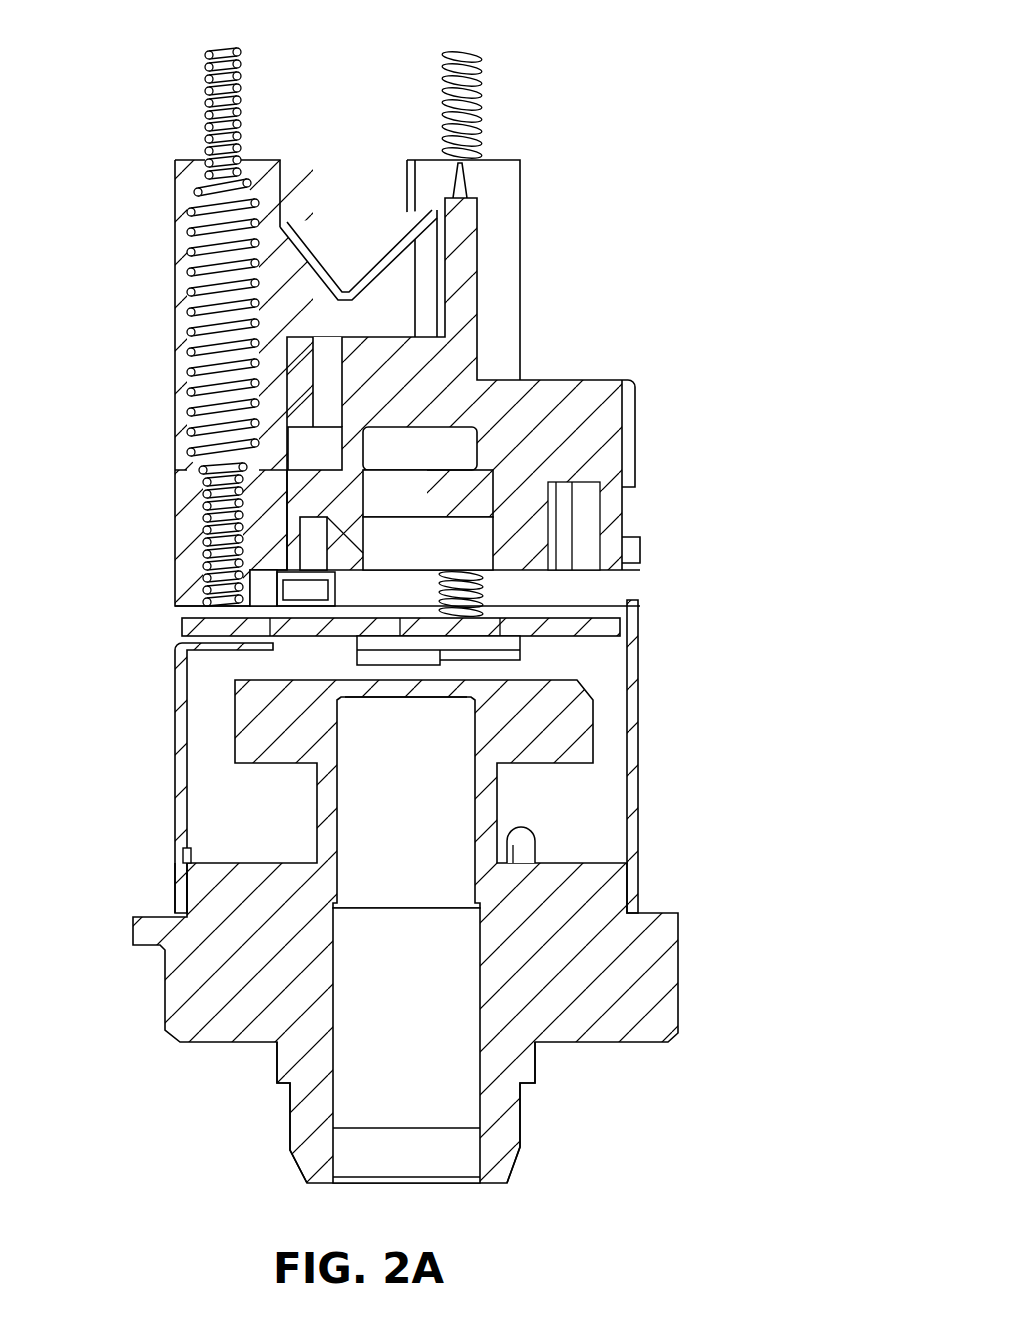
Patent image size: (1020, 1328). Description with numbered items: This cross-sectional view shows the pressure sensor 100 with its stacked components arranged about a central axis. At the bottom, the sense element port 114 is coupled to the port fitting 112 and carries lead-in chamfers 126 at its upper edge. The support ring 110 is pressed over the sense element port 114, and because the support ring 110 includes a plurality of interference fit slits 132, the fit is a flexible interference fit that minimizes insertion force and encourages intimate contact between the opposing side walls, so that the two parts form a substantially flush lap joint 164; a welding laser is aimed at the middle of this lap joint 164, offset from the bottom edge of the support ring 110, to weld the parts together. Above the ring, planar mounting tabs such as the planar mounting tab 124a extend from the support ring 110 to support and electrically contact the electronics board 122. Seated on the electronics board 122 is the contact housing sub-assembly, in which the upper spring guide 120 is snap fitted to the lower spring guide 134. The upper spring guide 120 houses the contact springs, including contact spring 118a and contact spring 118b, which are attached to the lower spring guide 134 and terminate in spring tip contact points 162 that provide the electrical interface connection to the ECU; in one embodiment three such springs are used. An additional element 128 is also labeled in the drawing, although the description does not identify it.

The pressure sensor 100 is at (723, 130).
The support ring 110 is at (406, 802).
The port fitting 112 is at (530, 1105).
The sense element port 114 is at (406, 1045).
The contact spring 118a is at (193, 60).
The contact spring 118b is at (480, 56).
The upper spring guide 120 is at (386, 390).
The electronics board 122 is at (577, 627).
The planar mounting tab 124a is at (237, 650).
The lead-in chamfers 126 is at (183, 857).
The housing 128 is at (143, 366).
The interference fit slit 132 is at (537, 840).
The lower spring guide 134 is at (577, 432).
The spring tip contact points 162 is at (180, 610).
The lap joint 164 is at (173, 885).